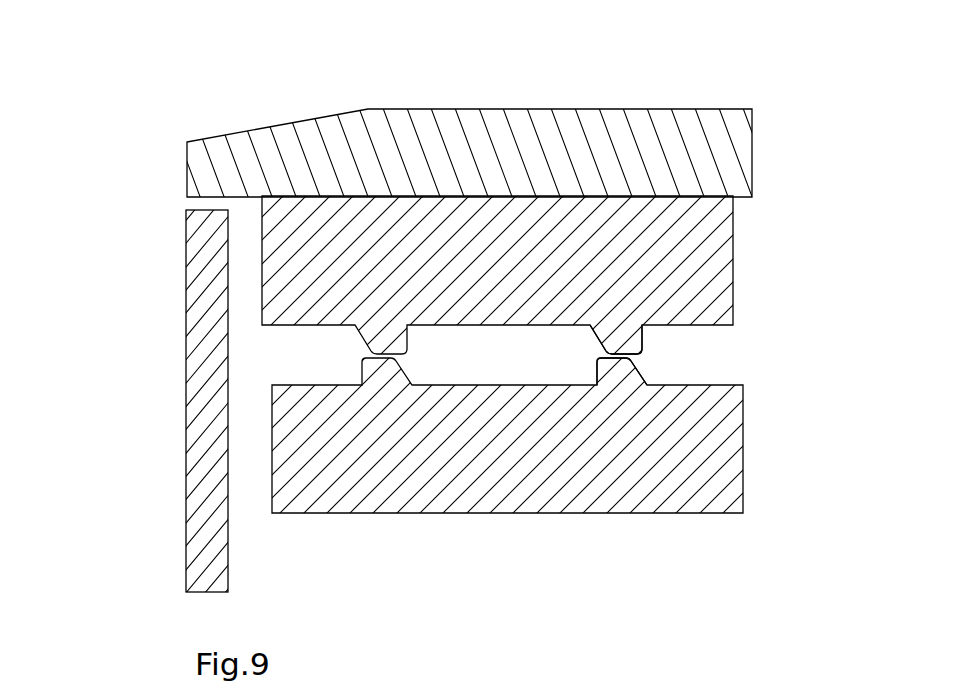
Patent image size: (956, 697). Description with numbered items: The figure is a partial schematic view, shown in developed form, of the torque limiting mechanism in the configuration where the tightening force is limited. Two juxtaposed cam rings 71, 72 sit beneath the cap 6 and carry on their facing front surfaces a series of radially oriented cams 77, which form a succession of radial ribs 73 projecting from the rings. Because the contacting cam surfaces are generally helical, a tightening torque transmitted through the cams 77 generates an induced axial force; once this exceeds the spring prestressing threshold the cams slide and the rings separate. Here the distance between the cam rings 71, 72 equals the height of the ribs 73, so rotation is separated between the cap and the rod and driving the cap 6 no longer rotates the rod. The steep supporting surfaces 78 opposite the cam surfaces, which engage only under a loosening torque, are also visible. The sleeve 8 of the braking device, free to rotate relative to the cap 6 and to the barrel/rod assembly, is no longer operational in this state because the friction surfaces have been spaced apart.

The cap 6 is at (484, 108).
The cam ring 72 is at (472, 263).
The cam ring 71 is at (521, 435).
The sleeve 8 is at (286, 400).
The cams 77 is at (711, 352).
The radial ribs 73 is at (671, 471).
The supporting surfaces 78 is at (547, 481).